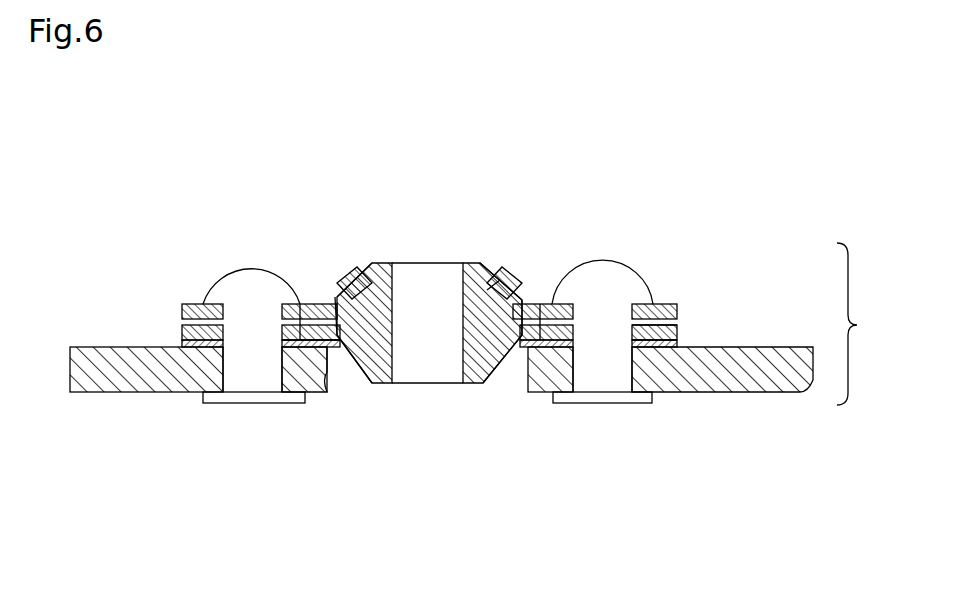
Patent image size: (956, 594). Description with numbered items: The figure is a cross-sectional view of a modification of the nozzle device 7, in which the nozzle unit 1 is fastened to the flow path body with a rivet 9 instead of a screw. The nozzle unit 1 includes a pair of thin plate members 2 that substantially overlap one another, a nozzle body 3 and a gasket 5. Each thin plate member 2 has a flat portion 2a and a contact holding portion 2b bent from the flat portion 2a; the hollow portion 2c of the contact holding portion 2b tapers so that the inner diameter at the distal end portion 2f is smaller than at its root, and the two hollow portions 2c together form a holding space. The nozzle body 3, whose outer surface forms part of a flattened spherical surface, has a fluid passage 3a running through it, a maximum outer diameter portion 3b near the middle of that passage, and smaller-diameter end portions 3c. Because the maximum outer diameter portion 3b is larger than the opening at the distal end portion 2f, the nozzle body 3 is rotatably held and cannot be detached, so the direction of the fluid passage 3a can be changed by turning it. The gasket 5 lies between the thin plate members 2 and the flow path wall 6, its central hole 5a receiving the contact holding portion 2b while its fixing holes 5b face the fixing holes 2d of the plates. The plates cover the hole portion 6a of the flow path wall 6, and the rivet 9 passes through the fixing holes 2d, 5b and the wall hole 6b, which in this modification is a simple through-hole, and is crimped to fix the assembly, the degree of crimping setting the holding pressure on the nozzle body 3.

The nozzle unit 1 is at (421, 192).
The thin plate member 2 is at (182, 312).
The flat portion 2a is at (300, 304).
The contact holding portion 2b is at (330, 272).
The hollow portion 2c is at (487, 270).
The fixing hole 2d is at (632, 330).
The distal end portion 2f is at (353, 268).
The nozzle body 3 is at (460, 265).
The fluid passage 3a is at (447, 355).
The maximum outer diameter portion 3b is at (338, 350).
The end portion 3c is at (383, 265).
The gasket 5 is at (182, 345).
The central hole 5a is at (290, 375).
The fixing hole 5b is at (638, 350).
The flow path wall 6 is at (120, 393).
The hole portion 6a is at (330, 372).
The threaded hole 6b is at (236, 392).
The nozzle device 7 is at (854, 324).
The rivet 9 is at (250, 280).